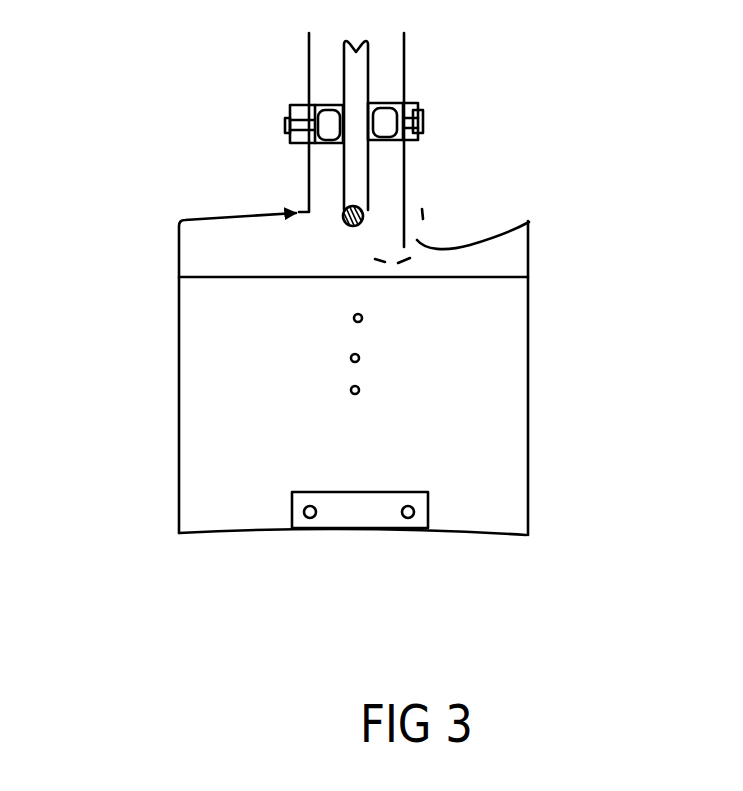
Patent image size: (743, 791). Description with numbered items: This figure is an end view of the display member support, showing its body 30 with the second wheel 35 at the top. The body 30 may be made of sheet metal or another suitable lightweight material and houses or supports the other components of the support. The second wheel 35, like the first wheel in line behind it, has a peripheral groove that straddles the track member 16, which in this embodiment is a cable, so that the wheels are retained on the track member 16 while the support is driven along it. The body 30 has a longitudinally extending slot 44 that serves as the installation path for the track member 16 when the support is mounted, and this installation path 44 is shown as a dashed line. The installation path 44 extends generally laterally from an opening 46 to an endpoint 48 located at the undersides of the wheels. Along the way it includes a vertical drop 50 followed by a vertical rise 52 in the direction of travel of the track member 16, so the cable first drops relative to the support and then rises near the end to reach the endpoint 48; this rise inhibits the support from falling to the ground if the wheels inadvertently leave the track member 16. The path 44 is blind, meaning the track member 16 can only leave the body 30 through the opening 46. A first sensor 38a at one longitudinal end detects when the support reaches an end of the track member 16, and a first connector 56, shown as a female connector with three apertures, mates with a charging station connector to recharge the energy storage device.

The track member 16 is at (340, 232).
The body 30 is at (530, 260).
The second wheel 35 is at (365, 67).
The first sensor 38a is at (387, 490).
The slot (installation path) 44 is at (417, 241).
The opening 46 is at (413, 208).
The endpoint 48 is at (345, 238).
The vertical drop 50 is at (433, 220).
The vertical rise 52 is at (366, 246).
The first connector 56 is at (401, 313).